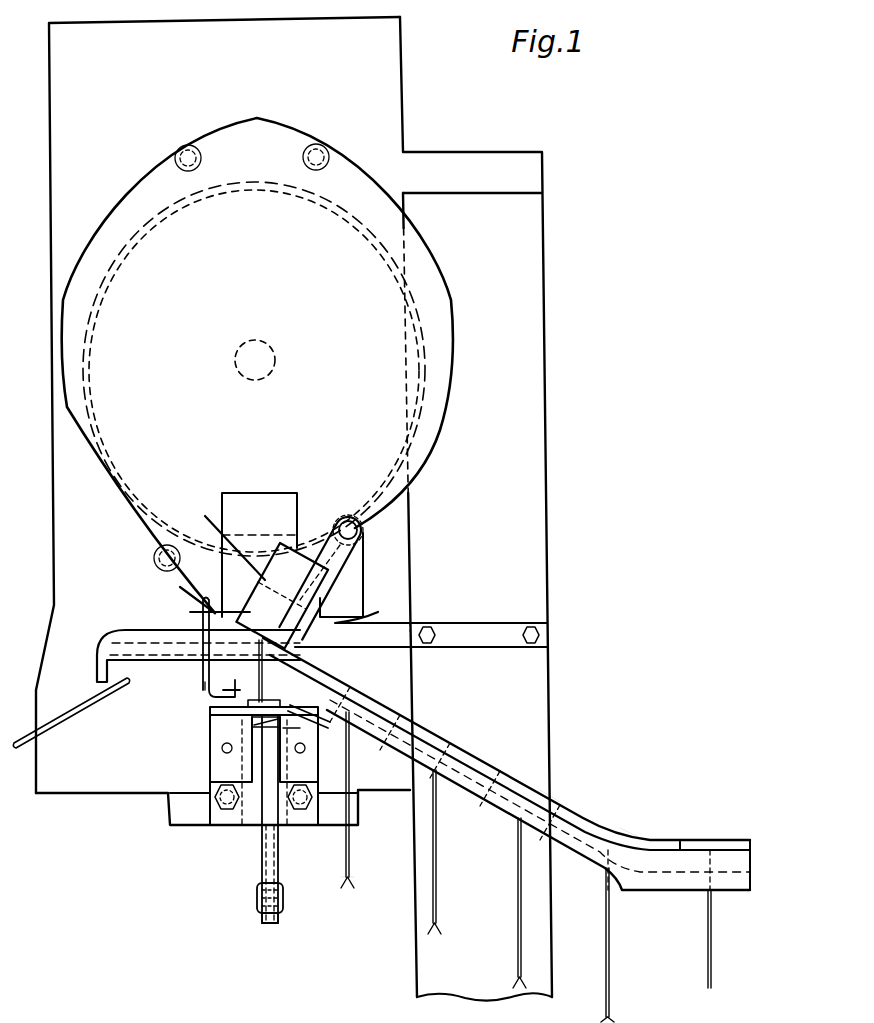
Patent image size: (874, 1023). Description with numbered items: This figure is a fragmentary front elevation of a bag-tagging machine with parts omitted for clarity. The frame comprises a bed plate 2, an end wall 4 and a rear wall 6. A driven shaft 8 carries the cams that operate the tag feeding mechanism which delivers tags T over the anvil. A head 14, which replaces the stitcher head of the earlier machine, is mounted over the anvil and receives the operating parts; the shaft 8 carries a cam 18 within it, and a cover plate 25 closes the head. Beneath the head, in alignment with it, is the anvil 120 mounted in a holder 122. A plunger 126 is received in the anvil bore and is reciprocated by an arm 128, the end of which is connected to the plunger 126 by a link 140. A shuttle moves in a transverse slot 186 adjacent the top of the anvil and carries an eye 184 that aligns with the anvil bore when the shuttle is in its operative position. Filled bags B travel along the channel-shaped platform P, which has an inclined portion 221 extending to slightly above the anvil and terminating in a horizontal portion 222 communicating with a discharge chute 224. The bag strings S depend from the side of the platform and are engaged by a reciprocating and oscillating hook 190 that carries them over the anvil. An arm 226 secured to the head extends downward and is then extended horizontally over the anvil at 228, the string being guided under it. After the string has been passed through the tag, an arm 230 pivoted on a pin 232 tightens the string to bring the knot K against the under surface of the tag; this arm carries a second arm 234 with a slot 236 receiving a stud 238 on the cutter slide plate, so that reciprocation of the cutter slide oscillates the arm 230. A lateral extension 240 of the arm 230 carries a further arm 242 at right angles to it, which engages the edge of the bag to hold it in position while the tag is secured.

The end wall 4 is at (55, 98).
The bed plate 2 is at (135, 793).
The rear wall 6 is at (405, 127).
The head 14 is at (450, 313).
The cover plate 25 is at (440, 373).
The cam 18 is at (128, 240).
The shaft 8 is at (265, 345).
The pin 232 is at (358, 532).
The second arm 234 is at (317, 533).
The lateral extension 240 is at (297, 550).
The second arm 242 is at (210, 520).
The arm 230 is at (421, 620).
The horizontal portion 222 is at (163, 667).
The discharge chute 224 is at (50, 730).
The arm 226 is at (203, 602).
The slot 236 is at (205, 595).
The stud or pin 238 is at (190, 612).
The tag T is at (205, 682).
The horizontal extension of arm 228 is at (223, 692).
The anvil 120 is at (237, 717).
The eye 184 is at (253, 728).
The hook 190 is at (315, 724).
The transverse slot 186 is at (283, 730).
The anvil holder 122 is at (205, 823).
The plunger 126 is at (262, 860).
The link 140 is at (257, 903).
The arm 128 is at (265, 918).
The inclined portion 221 is at (492, 808).
The platform P is at (553, 817).
The bag B is at (632, 832).
The string S is at (352, 860).
The knot K is at (343, 877).